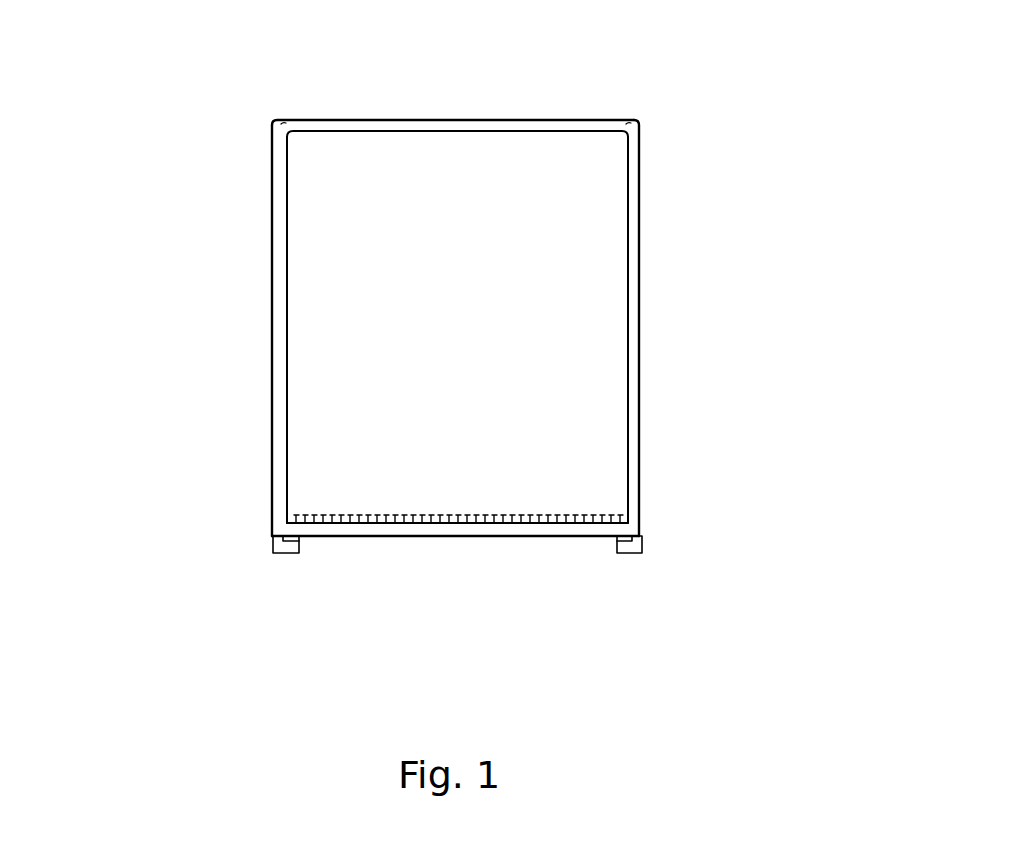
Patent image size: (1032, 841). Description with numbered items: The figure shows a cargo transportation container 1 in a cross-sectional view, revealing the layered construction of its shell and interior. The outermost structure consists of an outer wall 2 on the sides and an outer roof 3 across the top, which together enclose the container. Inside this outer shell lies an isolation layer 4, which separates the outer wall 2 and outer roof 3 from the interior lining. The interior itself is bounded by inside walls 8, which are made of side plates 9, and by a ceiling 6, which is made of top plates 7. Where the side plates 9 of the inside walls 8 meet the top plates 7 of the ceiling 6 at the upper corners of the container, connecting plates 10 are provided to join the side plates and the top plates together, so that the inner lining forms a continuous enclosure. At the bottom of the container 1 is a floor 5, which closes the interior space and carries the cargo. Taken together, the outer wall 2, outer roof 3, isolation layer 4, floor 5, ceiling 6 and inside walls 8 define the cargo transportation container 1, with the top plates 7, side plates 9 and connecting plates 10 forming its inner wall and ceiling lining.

The cargo transportation container 1 is at (673, 145).
The outer wall 2 is at (277, 248).
The outer roof 3 is at (327, 120).
The isolation layer 4 is at (280, 377).
The floor 5 is at (523, 528).
The ceiling 6 is at (460, 133).
The top plates 7 is at (500, 133).
The inside walls 8 is at (628, 373).
The side plates 9 is at (628, 415).
The connecting plates 10 is at (625, 135).